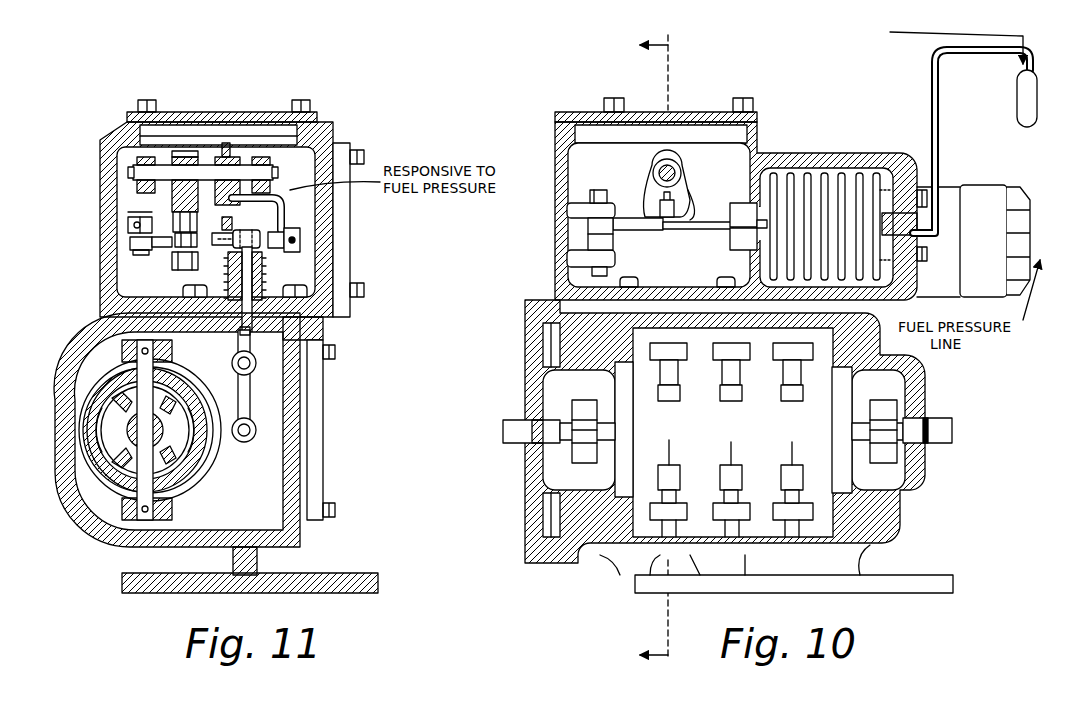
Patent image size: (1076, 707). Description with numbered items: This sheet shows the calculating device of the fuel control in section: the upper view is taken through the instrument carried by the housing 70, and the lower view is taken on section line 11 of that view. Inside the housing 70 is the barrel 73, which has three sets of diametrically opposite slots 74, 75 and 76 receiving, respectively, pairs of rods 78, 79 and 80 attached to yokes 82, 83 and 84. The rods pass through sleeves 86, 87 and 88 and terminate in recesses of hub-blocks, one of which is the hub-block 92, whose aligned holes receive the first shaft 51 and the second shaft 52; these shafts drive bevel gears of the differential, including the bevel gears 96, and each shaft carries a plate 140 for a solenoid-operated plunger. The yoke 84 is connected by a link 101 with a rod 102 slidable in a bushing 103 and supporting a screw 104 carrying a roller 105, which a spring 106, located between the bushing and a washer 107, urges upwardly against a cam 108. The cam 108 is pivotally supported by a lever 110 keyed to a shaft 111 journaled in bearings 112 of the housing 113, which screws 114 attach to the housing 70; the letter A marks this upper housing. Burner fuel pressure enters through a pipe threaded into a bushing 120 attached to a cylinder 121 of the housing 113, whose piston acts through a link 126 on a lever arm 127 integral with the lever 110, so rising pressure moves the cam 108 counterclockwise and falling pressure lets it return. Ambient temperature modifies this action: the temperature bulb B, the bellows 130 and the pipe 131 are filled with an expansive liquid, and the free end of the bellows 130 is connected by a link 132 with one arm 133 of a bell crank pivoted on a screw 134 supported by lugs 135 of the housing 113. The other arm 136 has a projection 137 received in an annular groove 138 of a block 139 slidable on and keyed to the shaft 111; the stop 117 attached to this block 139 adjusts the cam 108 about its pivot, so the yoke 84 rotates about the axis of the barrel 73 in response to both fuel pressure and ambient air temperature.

In FIG. 10, the section line 11- 11 is at (652, 361).
In FIG. 10, the shaft S1 51 is at (503, 430).
In FIG. 10, the shaft S2 52 is at (948, 428).
In FIG. 10, the housing 70 is at (880, 541).
In FIG. 11, the barrel 73 is at (127, 426).
In FIG. 10, the barrel 73 is at (625, 525).
In FIG. 10, the slots 74 is at (792, 400).
In FIG. 10, the slots 75 is at (731, 400).
In FIG. 11, the slots 76 is at (102, 392).
In FIG. 10, the slots 76 is at (670, 400).
In FIG. 10, the rods 78 is at (791, 486).
In FIG. 10, the rods 79 is at (730, 486).
In FIG. 11, the rods 80 is at (160, 343).
In FIG. 10, the rods 80 is at (668, 486).
In FIG. 10, the yoke 82 is at (773, 348).
In FIG. 10, the yoke 83 is at (713, 348).
In FIG. 11, the yoke 84 is at (221, 458).
In FIG. 10, the yoke 84 is at (650, 348).
In FIG. 10, the sleeves 86 is at (781, 386).
In FIG. 10, the sleeves 87 is at (720, 386).
In FIG. 11, the sleeves 88 is at (104, 482).
In FIG. 10, the sleeves 88 is at (658, 386).
In FIG. 11, the hub-block 92 is at (96, 418).
In FIG. 11, the bevel gears 96 is at (172, 392).
In FIG. 11, the link 101 is at (252, 388).
In FIG. 11, the rod 102 is at (315, 350).
In FIG. 11, the bushing 103 is at (305, 327).
In FIG. 11, the screw 104 is at (258, 233).
In FIG. 11, the roller 105 is at (203, 254).
In FIG. 11, the spring 106 is at (262, 280).
In FIG. 11, the washer 107 is at (252, 265).
In FIG. 11, the cam 108 is at (217, 217).
In FIG. 11, the lever 110 is at (226, 143).
In FIG. 11, the shaft 111 is at (248, 163).
In FIG. 10, the shaft 111 is at (685, 168).
In FIG. 11, the bearings 112 is at (147, 160).
In FIG. 11, the housing 113 is at (103, 147).
In FIG. 10, the housing 113 is at (795, 153).
In FIG. 11, the screws 114 is at (183, 293).
In FIG. 10, the stop 117 is at (645, 222).
In FIG. 10, the bushing 120 is at (1030, 180).
In FIG. 10, the cylinder 121 is at (980, 185).
In FIG. 11, the link 126 is at (300, 235).
In FIG. 11, the lever arm 127 is at (270, 205).
In FIG. 10, the bellows 130 is at (840, 173).
In FIG. 10, the pipe 131 is at (935, 82).
In FIG. 11, the link 132 is at (128, 226).
In FIG. 10, the link 132 is at (742, 240).
In FIG. 11, the arm 133 is at (130, 243).
In FIG. 10, the arm 133 is at (612, 255).
In FIG. 10, the screw 134 is at (597, 190).
In FIG. 10, the lugs 135 is at (570, 210).
In FIG. 10, the arm 136 is at (623, 218).
In FIG. 11, the projection 137 is at (173, 203).
In FIG. 10, the projection 137 is at (700, 210).
In FIG. 11, the annular groove 138 is at (190, 190).
In FIG. 11, the block 139 is at (178, 152).
In FIG. 10, the block 139 is at (662, 160).
In FIG. 10, the plate 140 is at (585, 395).
In FIG. 11, the arrow A is at (317, 120).
In FIG. 10, the arrow A is at (590, 112).
In FIG. 10, the temperature bulb B is at (1016, 100).